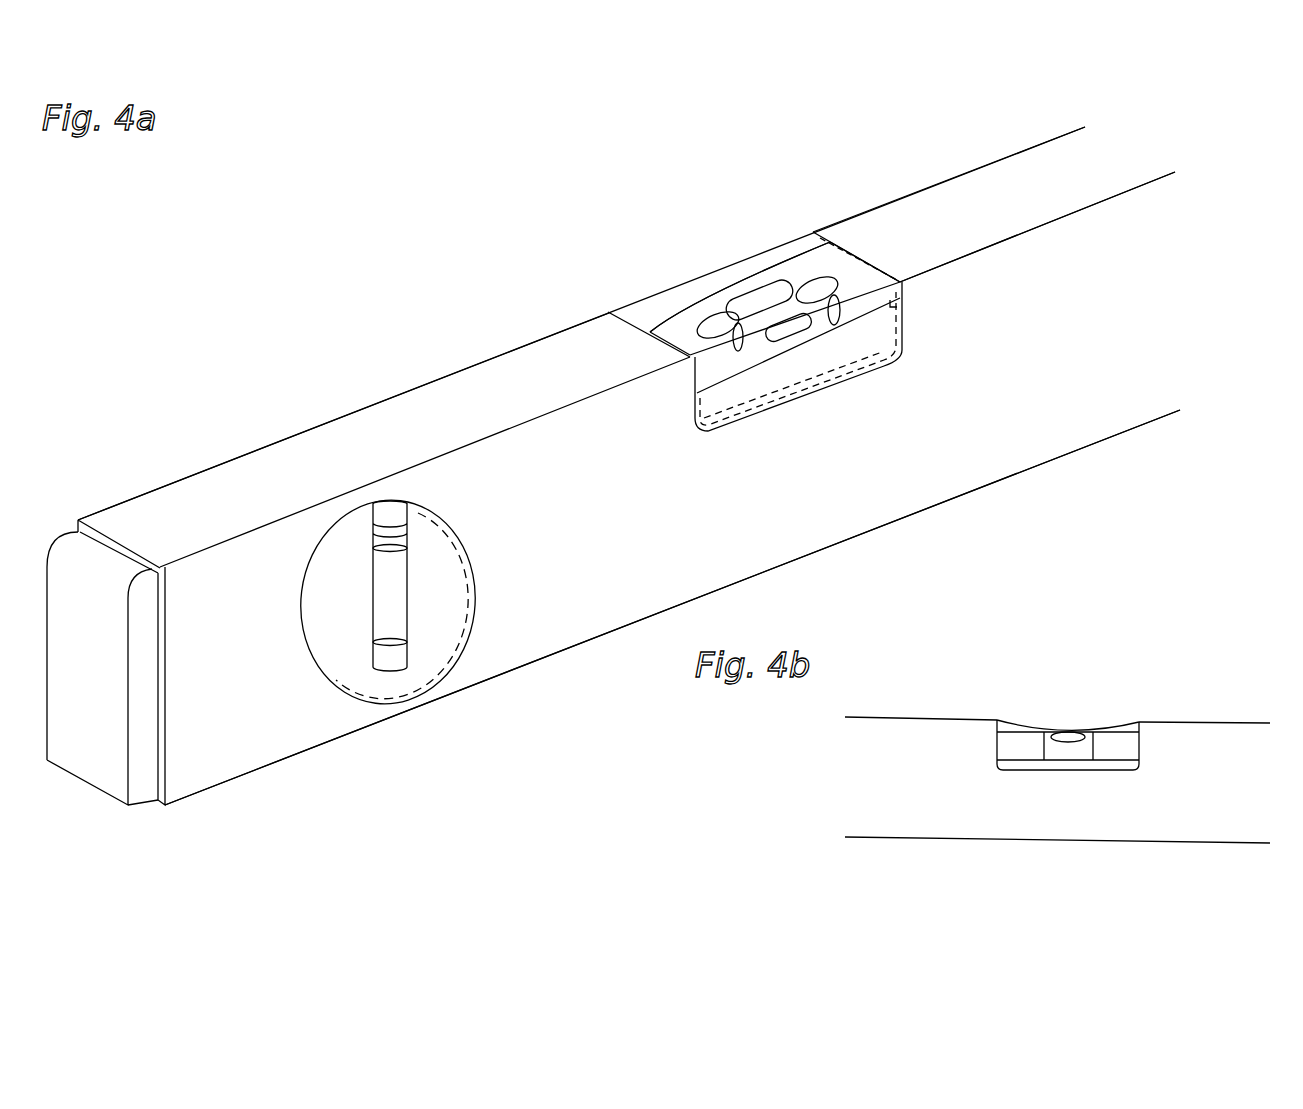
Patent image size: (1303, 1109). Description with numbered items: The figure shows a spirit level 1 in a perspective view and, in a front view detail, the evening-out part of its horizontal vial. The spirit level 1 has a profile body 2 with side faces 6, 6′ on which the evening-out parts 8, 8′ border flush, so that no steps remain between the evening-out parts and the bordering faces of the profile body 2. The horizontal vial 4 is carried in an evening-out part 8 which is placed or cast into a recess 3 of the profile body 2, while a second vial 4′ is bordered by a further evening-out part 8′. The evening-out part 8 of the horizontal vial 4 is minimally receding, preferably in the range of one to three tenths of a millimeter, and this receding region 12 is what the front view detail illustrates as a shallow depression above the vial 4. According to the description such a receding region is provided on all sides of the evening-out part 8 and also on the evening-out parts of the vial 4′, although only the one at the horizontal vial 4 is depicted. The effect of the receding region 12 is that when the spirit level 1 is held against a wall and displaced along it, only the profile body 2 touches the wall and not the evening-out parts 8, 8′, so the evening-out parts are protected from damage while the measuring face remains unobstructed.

In FIG. 4A, the spirit level 1 is at (457, 261).
In FIG. 4A, the profile body 2 is at (147, 517).
In FIG. 4A, the recess 3 is at (703, 435).
In FIG. 4A, the horizontal vial 4 is at (808, 275).
In FIG. 4B, the horizontal vial 4 is at (1013, 745).
In FIG. 4A, the vial 4′ is at (388, 578).
In FIG. 4A, the side face 6 is at (1015, 213).
In FIG. 4B, the side face 6 is at (1256, 810).
In FIG. 4A, the side face 6′ is at (1057, 361).
In FIG. 4A, the evening-out part 8 is at (663, 313).
In FIG. 4B, the evening-out part 8 is at (1132, 730).
In FIG. 4A, the evening-out part 8′ is at (327, 613).
In FIG. 4A, the receding region 12 is at (713, 250).
In FIG. 4B, the receding region 12 is at (1077, 708).